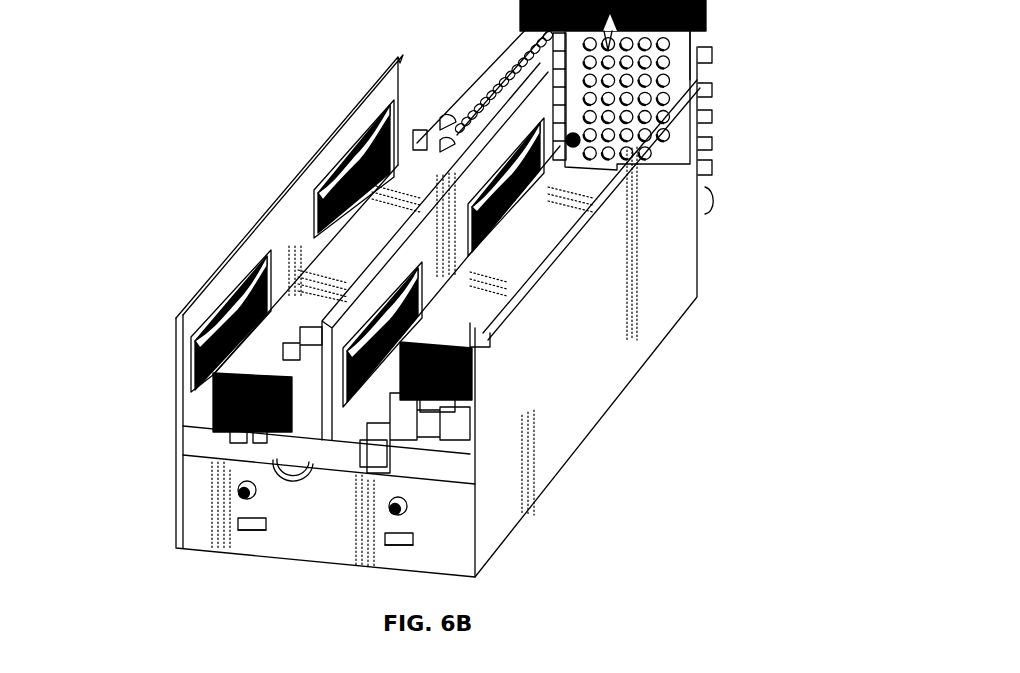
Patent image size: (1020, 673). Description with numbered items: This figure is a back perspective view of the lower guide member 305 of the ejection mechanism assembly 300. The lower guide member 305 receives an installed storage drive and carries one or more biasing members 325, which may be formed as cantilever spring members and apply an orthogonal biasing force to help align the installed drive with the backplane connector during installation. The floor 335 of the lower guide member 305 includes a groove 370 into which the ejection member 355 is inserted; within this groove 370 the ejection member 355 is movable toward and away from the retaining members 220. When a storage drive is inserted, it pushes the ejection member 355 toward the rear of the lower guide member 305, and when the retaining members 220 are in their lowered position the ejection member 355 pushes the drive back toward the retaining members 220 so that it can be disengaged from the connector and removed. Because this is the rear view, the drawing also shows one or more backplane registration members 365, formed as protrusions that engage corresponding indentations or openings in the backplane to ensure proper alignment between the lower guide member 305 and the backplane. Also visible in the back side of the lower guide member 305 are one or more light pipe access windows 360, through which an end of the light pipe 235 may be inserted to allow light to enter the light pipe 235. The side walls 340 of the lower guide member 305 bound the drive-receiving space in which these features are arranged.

The ejection mechanism assembly 300 is at (232, 102).
The lower guide member 305 is at (688, 283).
The retaining members 220 is at (487, 70).
The biasing member 325 is at (236, 302).
The floor 335 is at (203, 413).
The side wall 340 is at (176, 360).
The ejection member 355 is at (213, 375).
The groove 370 is at (282, 360).
The backplane registration member 365 is at (236, 490).
The light pipe access window 360 is at (258, 540).
The light pipe 235 is at (247, 535).